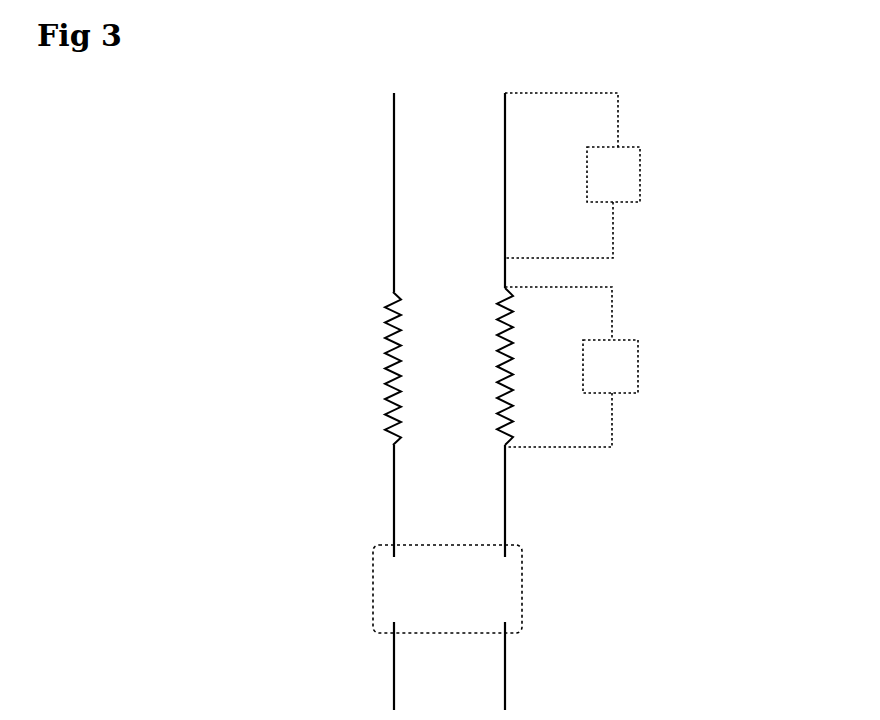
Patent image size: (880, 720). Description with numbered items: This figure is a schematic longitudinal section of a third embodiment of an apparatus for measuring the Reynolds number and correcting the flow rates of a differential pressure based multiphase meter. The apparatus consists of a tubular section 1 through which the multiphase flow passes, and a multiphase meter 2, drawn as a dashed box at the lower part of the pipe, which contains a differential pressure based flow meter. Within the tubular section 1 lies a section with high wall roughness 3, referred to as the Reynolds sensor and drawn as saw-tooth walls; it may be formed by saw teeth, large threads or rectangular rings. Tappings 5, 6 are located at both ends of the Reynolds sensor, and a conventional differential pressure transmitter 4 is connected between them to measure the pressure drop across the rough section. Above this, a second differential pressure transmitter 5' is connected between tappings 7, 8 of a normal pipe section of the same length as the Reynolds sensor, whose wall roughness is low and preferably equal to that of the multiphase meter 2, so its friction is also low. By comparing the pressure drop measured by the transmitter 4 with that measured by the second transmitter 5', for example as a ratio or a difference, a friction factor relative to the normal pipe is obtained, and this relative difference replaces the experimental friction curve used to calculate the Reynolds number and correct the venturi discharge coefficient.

The tubular section 1 is at (508, 657).
The multiphase meter 2 is at (473, 565).
The section with high wall roughness 3 is at (380, 368).
The differential pressure transmitter 4 is at (617, 367).
The tapping 5 is at (559, 384).
The second differential pressure transmitter 5' is at (636, 149).
The tapping 6 is at (538, 290).
The pipe section tapping 7 is at (545, 252).
The pipe section tapping 8 is at (523, 92).